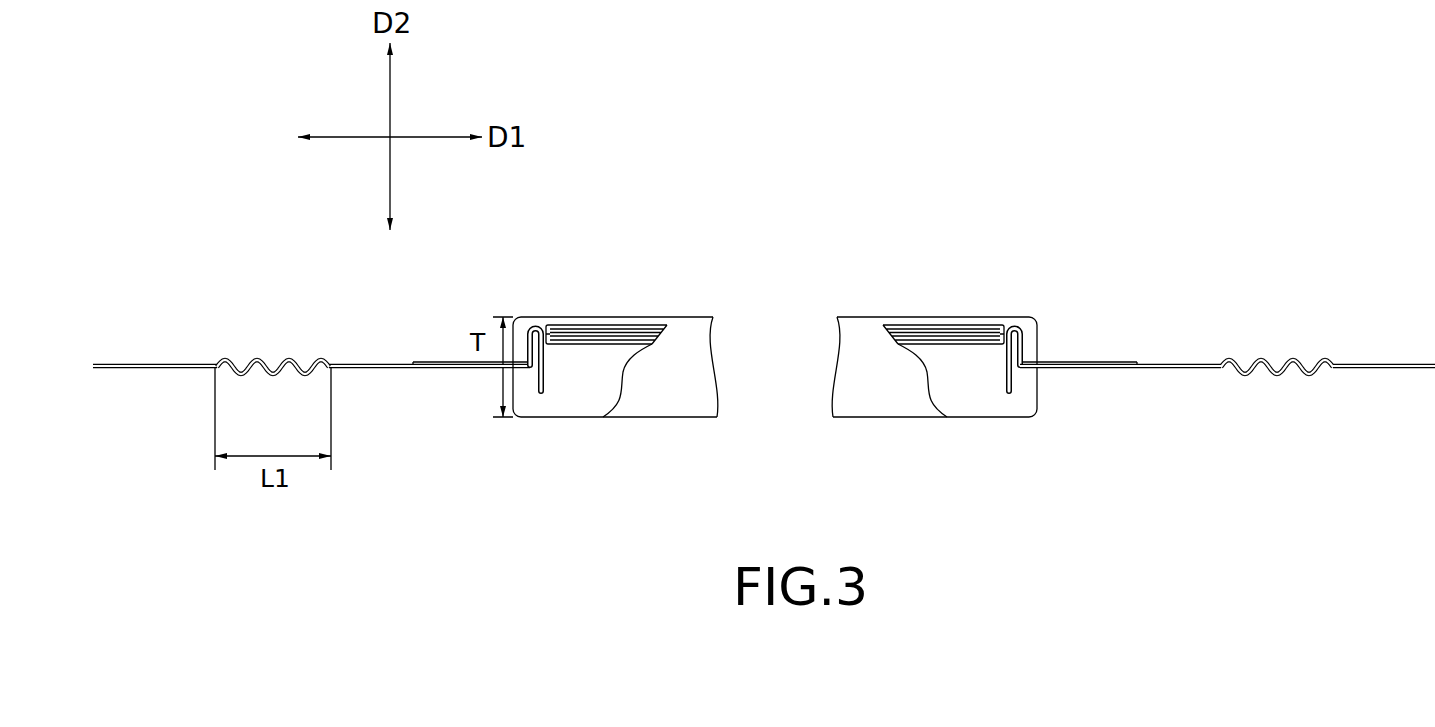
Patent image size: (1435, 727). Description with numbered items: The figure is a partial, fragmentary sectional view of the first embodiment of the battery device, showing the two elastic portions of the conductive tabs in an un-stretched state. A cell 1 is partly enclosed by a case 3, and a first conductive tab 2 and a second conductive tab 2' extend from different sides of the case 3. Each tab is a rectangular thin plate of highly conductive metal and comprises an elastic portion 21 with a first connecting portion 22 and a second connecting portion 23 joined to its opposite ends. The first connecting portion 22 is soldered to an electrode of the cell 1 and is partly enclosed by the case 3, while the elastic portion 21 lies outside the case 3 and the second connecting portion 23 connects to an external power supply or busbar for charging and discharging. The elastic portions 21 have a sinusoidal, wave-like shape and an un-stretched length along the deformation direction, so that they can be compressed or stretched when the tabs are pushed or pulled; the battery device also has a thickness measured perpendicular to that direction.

The cell 1 is at (580, 322).
The first conductive tab 2 is at (1227, 315).
The second conductive tab 2' is at (311, 364).
The case 3 is at (615, 325).
The elastic portion 21 is at (257, 361).
The first connecting portion 22 is at (382, 368).
The second connecting portion 23 is at (158, 368).